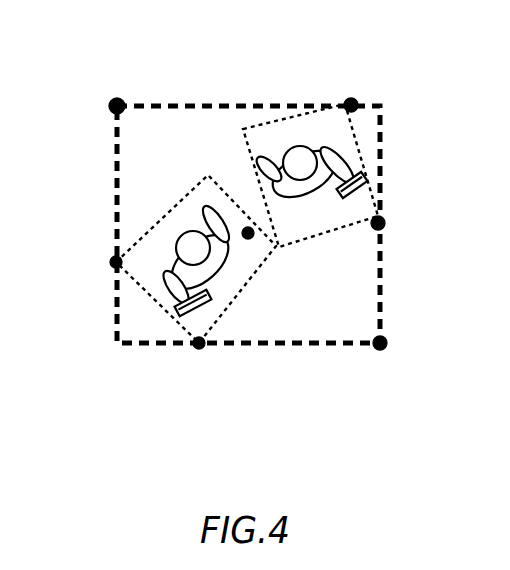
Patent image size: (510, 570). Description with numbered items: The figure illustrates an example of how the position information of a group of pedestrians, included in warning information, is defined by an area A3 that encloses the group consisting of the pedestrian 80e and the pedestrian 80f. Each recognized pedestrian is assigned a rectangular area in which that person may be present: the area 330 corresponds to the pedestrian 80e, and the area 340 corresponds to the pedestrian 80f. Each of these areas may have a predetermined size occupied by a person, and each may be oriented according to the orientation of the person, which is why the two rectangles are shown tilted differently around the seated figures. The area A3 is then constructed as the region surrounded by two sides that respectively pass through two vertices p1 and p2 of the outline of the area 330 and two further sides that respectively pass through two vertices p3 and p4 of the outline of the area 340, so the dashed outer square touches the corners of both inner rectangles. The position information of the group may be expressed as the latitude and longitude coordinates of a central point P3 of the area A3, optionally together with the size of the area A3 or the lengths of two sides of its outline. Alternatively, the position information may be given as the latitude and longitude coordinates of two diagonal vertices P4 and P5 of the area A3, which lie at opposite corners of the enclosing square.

The area A3 is at (381, 297).
The area 340 is at (267, 127).
The area 330 is at (150, 288).
The pedestrian 80f is at (302, 146).
The pedestrian 80e is at (210, 270).
The diagonal vertex P5 is at (109, 105).
The vertex p4 is at (351, 98).
The vertex p3 is at (385, 223).
The diagonal vertex P4 is at (386, 343).
The vertex p1 is at (110, 263).
The vertex p2 is at (199, 350).
The central point P3 is at (247, 240).